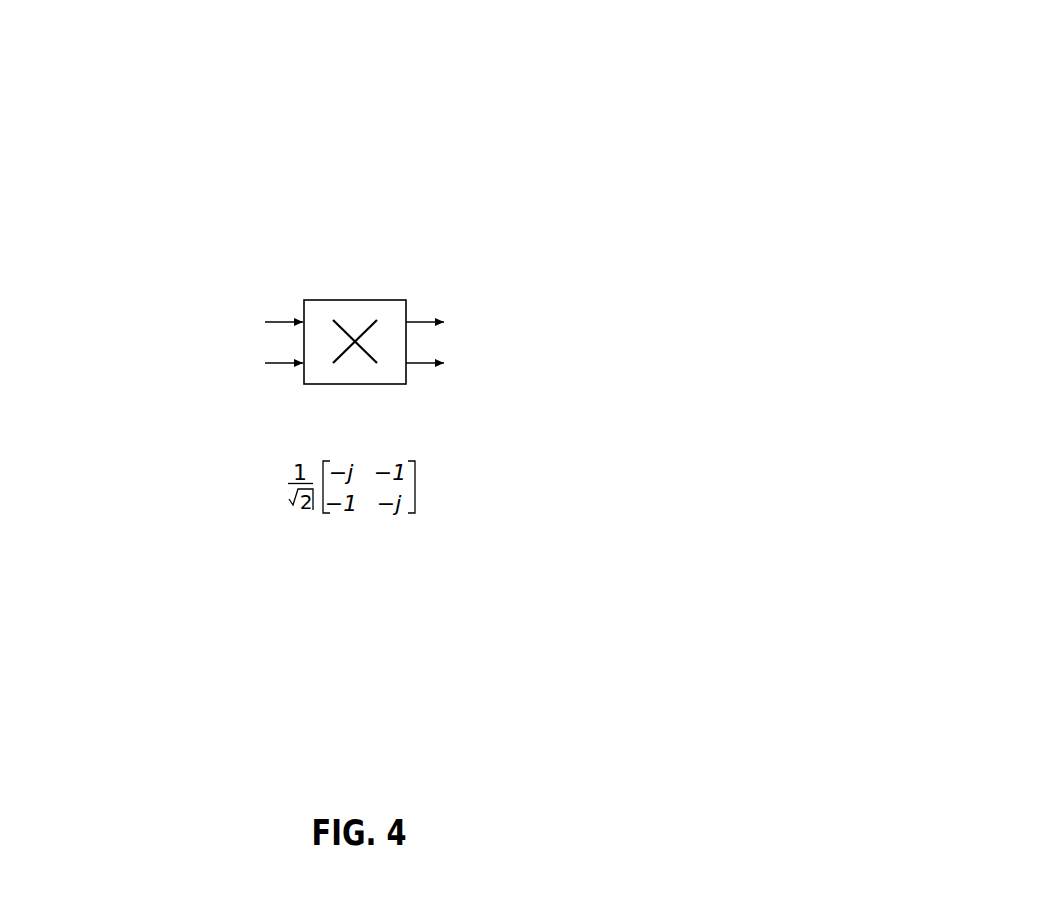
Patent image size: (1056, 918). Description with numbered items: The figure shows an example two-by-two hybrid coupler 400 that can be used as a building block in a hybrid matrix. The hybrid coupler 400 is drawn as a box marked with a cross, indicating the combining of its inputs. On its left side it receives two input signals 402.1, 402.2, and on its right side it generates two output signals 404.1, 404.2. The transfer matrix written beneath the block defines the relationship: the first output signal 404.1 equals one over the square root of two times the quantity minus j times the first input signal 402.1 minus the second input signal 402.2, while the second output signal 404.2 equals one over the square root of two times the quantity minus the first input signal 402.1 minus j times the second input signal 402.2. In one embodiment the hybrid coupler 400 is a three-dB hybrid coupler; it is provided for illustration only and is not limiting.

The hybrid coupler 400 is at (968, 48).
The input signal 402.1 is at (283, 296).
The input signal 402.2 is at (280, 385).
The output signal 404.1 is at (462, 296).
The output signal 404.2 is at (438, 385).